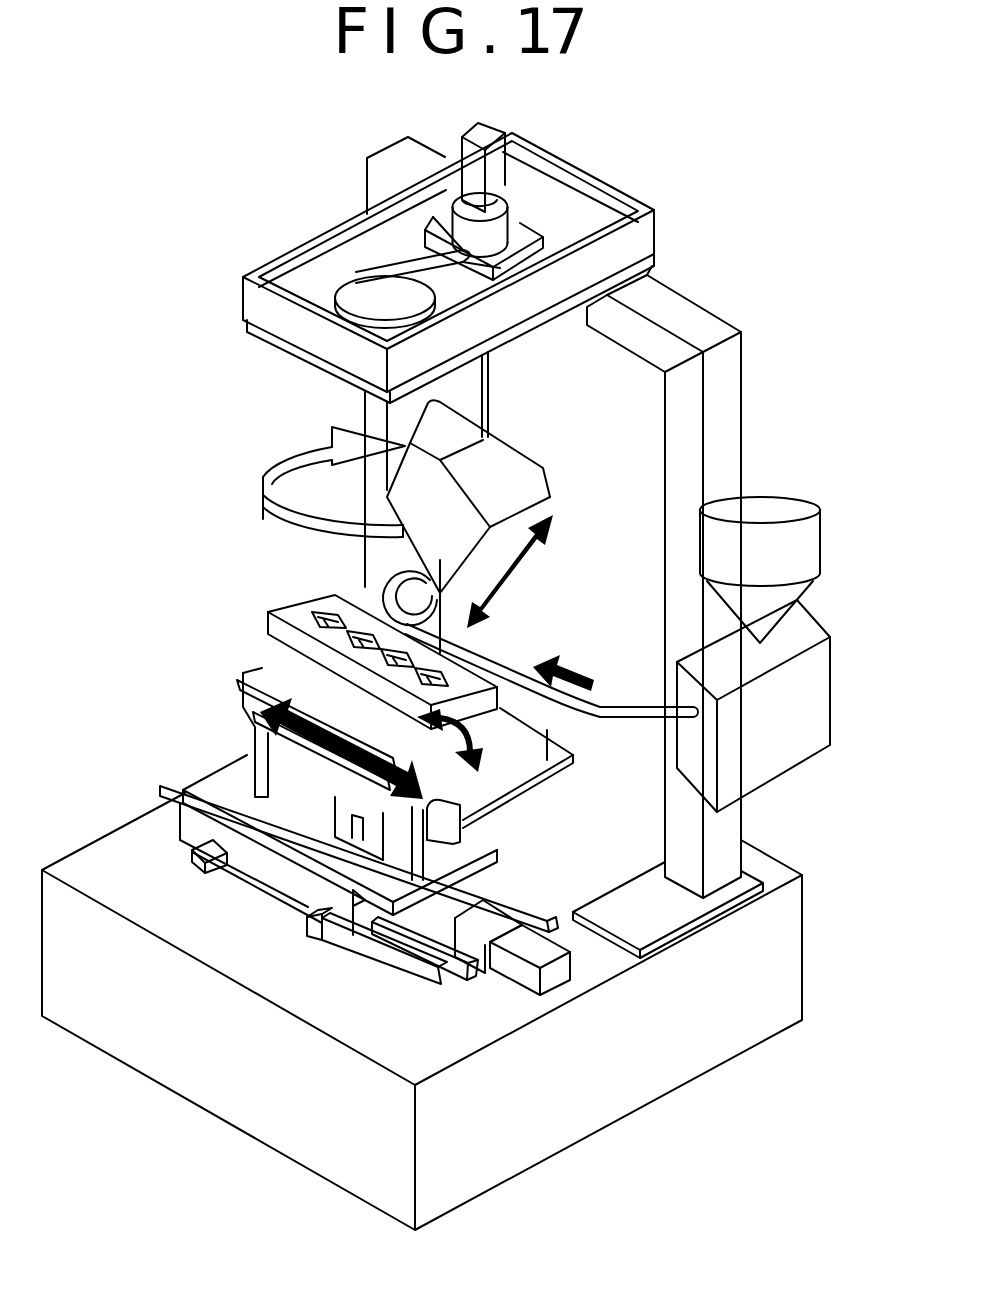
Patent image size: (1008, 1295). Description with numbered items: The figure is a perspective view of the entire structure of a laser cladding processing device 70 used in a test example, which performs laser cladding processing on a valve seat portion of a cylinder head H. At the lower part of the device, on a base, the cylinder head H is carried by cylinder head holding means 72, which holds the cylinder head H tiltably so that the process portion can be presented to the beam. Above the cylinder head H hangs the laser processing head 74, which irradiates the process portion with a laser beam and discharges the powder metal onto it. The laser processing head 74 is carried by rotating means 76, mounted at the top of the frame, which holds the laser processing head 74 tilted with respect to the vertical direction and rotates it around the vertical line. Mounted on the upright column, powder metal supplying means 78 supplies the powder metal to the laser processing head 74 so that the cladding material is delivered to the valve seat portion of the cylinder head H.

The laser cladding processing device 70 is at (867, 204).
The cylinder head holding means 72 is at (245, 725).
The laser processing head 74 is at (440, 513).
The rotating means 76 is at (297, 228).
The powder metal supplying means 78 is at (843, 690).
The cylinder head H is at (257, 637).